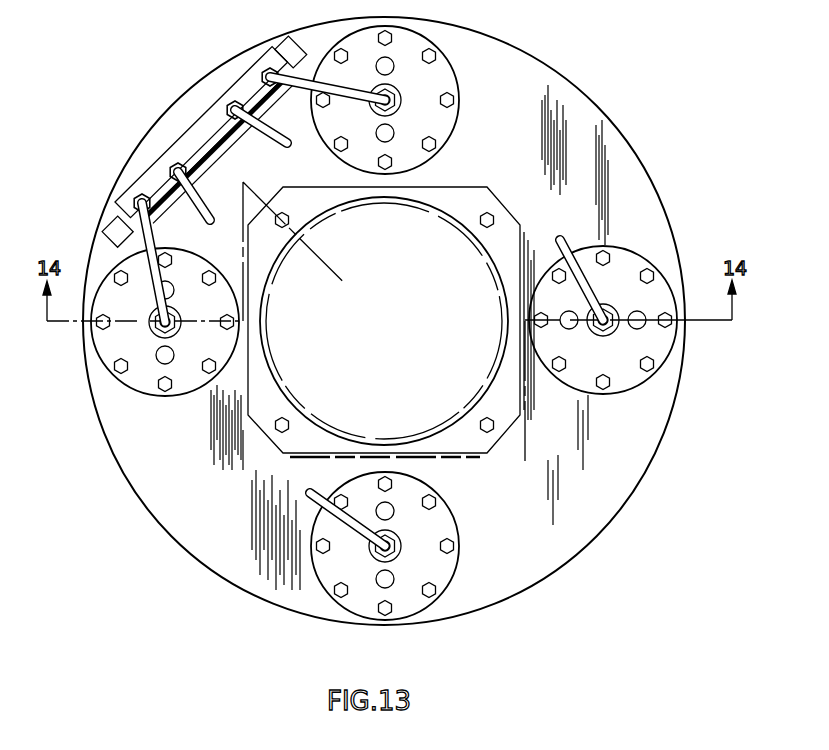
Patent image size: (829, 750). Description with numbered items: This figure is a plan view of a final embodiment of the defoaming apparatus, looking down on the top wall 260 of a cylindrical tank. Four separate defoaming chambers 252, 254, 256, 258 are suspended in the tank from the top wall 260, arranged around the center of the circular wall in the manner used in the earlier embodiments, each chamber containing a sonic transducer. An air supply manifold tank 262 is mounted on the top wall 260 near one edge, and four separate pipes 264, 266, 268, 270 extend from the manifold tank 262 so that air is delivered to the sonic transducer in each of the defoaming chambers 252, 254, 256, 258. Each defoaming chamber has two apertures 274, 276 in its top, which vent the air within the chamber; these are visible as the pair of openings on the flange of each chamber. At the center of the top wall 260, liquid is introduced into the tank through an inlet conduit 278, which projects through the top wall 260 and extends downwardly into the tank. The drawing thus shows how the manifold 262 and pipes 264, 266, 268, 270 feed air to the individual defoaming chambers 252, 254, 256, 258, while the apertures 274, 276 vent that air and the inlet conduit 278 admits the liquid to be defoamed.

The defoaming chamber 252 is at (158, 395).
The defoaming chamber 254 is at (450, 125).
The defoaming chamber 256 is at (637, 382).
The defoaming chamber 258 is at (411, 564).
The top wall 260 is at (218, 509).
The air supply manifold tank 262 is at (157, 178).
The pipe 264 is at (155, 283).
The pipe 266 is at (213, 220).
The pipe 268 is at (262, 144).
The pipe 270 is at (302, 82).
The aperture 274 is at (392, 510).
The aperture 276 is at (382, 587).
The inlet conduit 278 is at (347, 438).